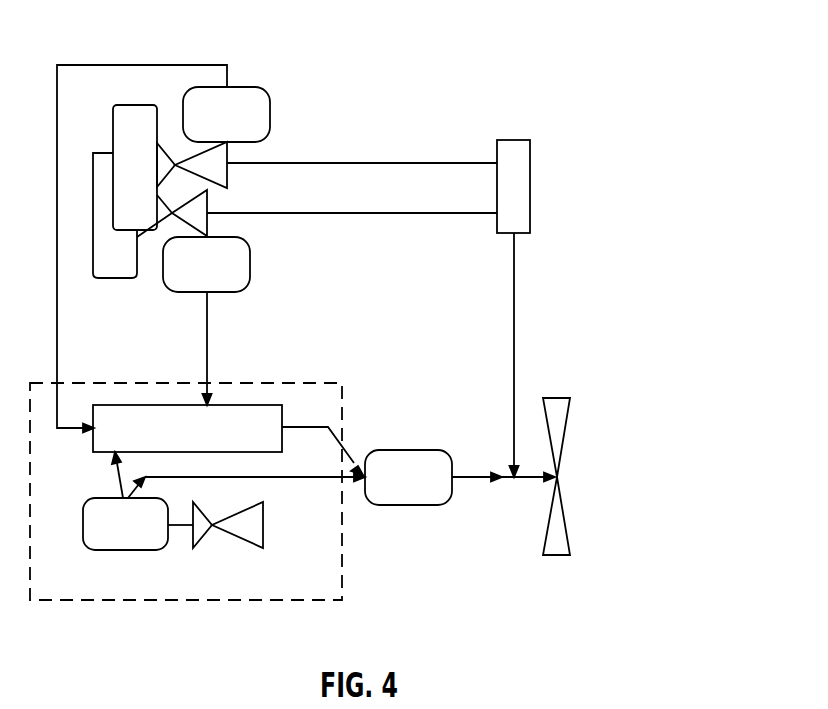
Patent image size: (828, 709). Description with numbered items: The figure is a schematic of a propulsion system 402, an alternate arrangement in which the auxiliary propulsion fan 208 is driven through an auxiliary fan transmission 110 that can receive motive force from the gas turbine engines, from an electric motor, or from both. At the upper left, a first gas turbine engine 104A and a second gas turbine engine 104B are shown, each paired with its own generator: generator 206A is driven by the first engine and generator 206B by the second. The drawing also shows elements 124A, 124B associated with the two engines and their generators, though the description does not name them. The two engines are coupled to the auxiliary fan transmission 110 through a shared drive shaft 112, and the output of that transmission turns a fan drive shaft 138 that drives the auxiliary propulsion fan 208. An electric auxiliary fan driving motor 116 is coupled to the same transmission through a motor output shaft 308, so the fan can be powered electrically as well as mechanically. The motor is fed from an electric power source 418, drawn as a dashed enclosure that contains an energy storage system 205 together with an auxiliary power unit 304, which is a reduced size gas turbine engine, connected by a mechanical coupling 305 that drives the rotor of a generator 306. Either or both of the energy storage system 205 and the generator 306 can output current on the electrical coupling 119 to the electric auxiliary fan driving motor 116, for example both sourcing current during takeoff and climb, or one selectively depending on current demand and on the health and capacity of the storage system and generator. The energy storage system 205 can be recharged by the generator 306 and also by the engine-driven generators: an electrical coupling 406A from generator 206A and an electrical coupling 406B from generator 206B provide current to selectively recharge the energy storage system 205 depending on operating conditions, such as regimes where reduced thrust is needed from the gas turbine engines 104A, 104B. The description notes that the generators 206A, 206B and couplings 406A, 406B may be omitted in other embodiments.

The propulsion system 402 is at (650, 97).
The electrical coupling 406A is at (162, 65).
The electrical coupling 406B is at (208, 320).
The first gas turbine engine 104A is at (112, 127).
The second gas turbine engine 104B is at (113, 278).
The generator 206A is at (243, 90).
The generator 206B is at (250, 263).
The shaft 124A is at (422, 162).
The shaft 124B is at (402, 217).
The auxiliary fan transmission 110 is at (512, 140).
The shared drive shaft 112 is at (515, 310).
The energy storage system 205 is at (132, 405).
The electric power source 418 is at (308, 382).
The electric auxiliary fan driving motor 116 is at (408, 450).
The electrical coupling 119 is at (328, 480).
The generator 306 is at (125, 550).
The mechanical coupling 305 is at (180, 525).
The auxiliary power unit 304 is at (262, 548).
The motor output shaft 308 is at (470, 480).
The fan drive shaft 138 is at (532, 480).
The auxiliary propulsion fan 208 is at (557, 397).